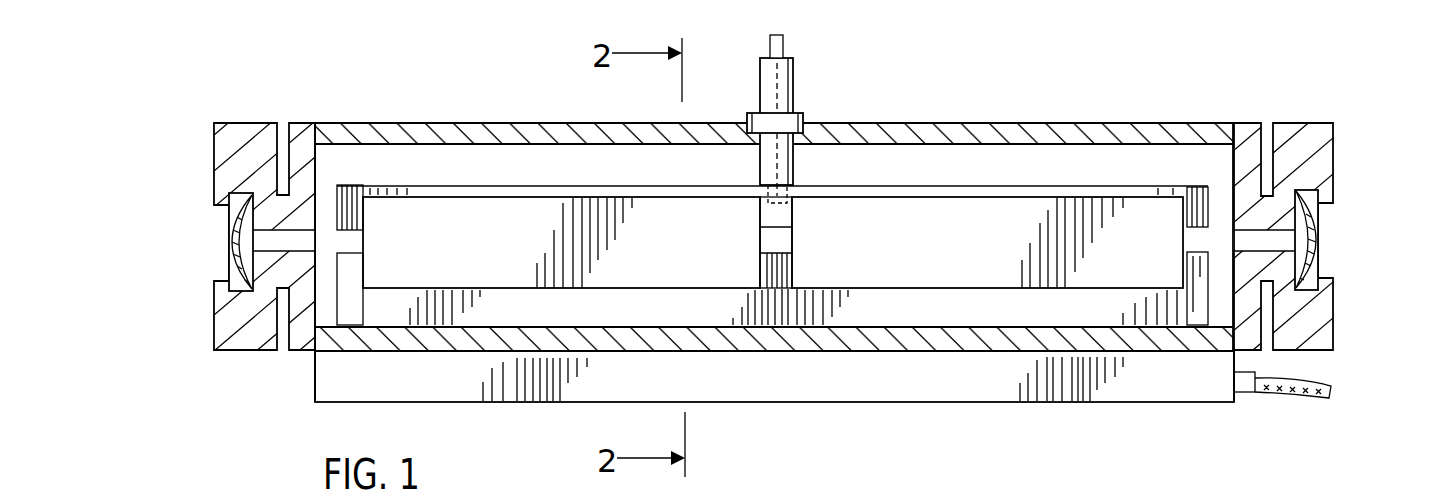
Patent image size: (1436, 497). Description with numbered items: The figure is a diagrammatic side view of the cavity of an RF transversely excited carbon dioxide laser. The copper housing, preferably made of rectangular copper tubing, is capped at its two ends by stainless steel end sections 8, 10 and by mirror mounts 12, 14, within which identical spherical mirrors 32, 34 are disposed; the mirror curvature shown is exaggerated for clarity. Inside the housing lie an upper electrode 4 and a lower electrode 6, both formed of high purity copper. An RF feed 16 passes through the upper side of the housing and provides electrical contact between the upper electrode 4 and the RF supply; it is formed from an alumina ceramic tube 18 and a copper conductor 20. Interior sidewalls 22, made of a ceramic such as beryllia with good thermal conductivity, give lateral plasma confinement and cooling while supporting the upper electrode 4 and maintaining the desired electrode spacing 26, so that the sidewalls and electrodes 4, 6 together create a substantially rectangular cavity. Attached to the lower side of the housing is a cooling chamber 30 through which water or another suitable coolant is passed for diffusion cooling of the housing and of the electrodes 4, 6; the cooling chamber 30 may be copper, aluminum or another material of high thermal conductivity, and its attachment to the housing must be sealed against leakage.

The electrode 4 is at (565, 190).
The electrode 6 is at (1135, 310).
The end section 8 is at (292, 122).
The end section 10 is at (1247, 123).
The mirror mount 12 is at (240, 190).
The mirror mount 14 is at (1333, 157).
The RF feed 16 is at (818, 96).
The alumina ceramic tube 18 is at (762, 75).
The copper conductor 20 is at (783, 48).
The interior sidewall 22 is at (812, 278).
The electrode spacing 26 is at (345, 242).
The cooling chamber 30 is at (1005, 382).
The spherical mirror 32 is at (230, 242).
The spherical mirror 34 is at (1333, 252).